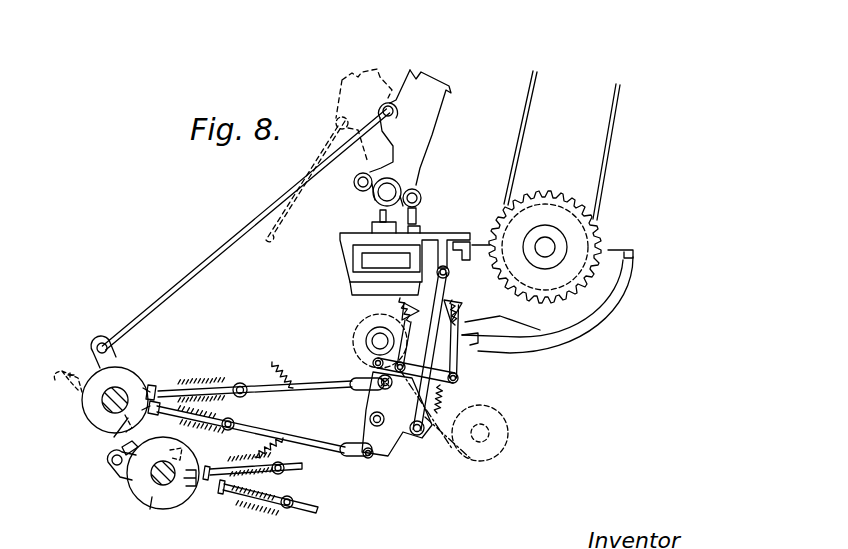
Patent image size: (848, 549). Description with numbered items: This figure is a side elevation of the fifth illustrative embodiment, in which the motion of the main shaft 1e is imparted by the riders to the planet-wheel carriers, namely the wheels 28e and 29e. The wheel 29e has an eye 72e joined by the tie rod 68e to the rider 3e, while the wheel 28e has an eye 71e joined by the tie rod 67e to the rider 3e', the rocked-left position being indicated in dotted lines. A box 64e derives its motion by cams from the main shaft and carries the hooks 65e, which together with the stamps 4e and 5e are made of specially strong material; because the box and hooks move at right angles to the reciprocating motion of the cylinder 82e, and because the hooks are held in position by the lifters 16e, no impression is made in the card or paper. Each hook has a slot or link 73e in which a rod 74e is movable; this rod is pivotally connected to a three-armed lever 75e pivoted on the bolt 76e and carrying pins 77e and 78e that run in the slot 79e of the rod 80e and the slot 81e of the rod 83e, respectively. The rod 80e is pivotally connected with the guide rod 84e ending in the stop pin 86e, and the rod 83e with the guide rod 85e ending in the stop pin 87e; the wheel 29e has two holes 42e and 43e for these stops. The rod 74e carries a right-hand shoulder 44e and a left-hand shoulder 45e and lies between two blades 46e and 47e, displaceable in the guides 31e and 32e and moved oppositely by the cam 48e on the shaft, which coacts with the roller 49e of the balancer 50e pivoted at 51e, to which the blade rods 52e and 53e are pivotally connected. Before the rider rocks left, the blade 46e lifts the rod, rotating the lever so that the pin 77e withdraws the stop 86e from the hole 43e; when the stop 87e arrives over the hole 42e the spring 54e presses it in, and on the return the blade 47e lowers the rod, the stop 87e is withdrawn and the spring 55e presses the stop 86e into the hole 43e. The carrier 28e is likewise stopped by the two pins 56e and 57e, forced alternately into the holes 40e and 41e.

The rider 3e is at (402, 138).
The rider 3e' is at (364, 102).
The tie rod 67e is at (300, 190).
The tie rod 68e is at (244, 228).
The stamp 4e is at (356, 188).
The stamp 5e is at (421, 200).
The lifter 16e is at (380, 214).
The box 64e is at (356, 256).
The hook 65e is at (442, 242).
The slot or link 73e is at (452, 246).
The right-hand shoulder 44e is at (449, 274).
The cylinder 82e is at (516, 294).
The left-hand shoulder 45e is at (547, 309).
The blade 46e is at (496, 318).
The blade rod 52e is at (488, 335).
The guide 32e is at (406, 308).
The guide 31e is at (469, 308).
The blade 47e is at (403, 312).
The blade rod 53e is at (417, 322).
The cam 48e is at (380, 327).
The rod 74e is at (457, 360).
The main shaft 1e is at (380, 341).
The roller 49e is at (373, 362).
The rod 83e is at (308, 386).
The slot 81e is at (352, 384).
The guide rod 85e is at (243, 406).
The spring 54e is at (272, 362).
The spring 55e is at (268, 435).
The rod 80e is at (306, 438).
The guide rod 84e is at (206, 426).
The pin 78e is at (410, 416).
The bolt 76e is at (370, 419).
The three-armed lever 75e is at (416, 436).
The slot 79e is at (350, 456).
The pin 77e is at (368, 459).
The pivot 51e is at (437, 414).
The balancer 50e is at (457, 381).
The planet-wheel carrier 29e is at (88, 409).
The eye 72e is at (91, 352).
The hole 43e is at (147, 384).
The stop pin 87e is at (158, 390).
The stop pin 86e is at (155, 413).
The hole 42e is at (120, 424).
The planet-wheel carrier 28e is at (152, 509).
The eye 71e is at (117, 470).
The hole 40e is at (152, 449).
The hole 41e is at (186, 490).
The pin 57e is at (212, 468).
The pin 56e is at (222, 492).